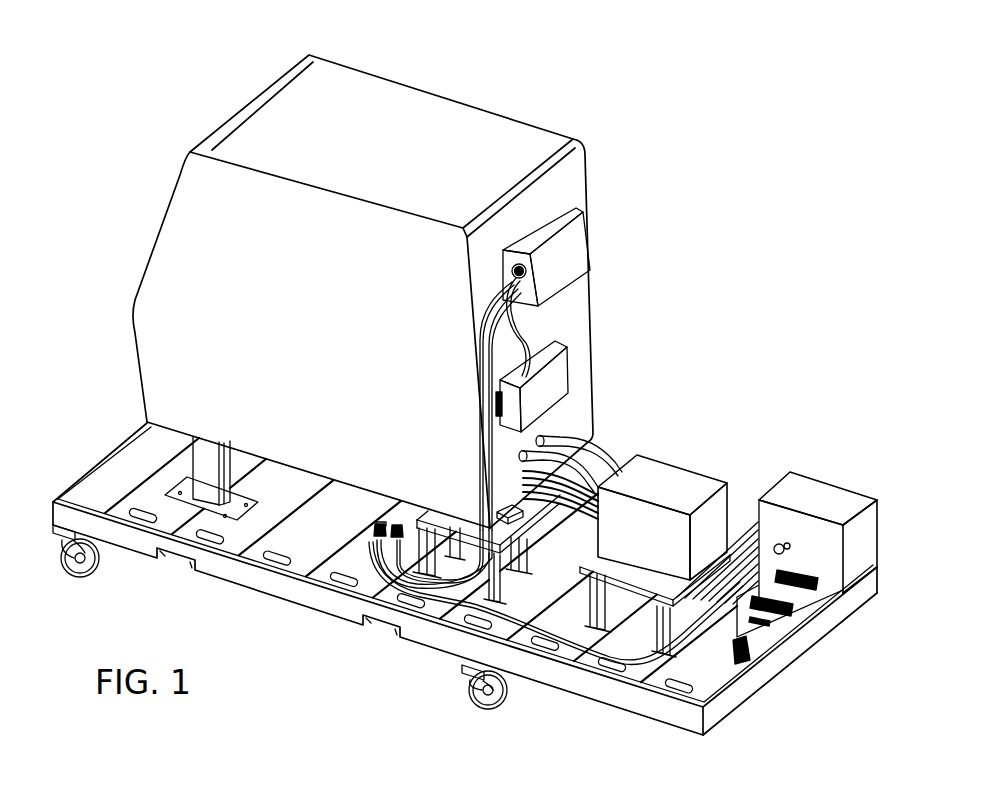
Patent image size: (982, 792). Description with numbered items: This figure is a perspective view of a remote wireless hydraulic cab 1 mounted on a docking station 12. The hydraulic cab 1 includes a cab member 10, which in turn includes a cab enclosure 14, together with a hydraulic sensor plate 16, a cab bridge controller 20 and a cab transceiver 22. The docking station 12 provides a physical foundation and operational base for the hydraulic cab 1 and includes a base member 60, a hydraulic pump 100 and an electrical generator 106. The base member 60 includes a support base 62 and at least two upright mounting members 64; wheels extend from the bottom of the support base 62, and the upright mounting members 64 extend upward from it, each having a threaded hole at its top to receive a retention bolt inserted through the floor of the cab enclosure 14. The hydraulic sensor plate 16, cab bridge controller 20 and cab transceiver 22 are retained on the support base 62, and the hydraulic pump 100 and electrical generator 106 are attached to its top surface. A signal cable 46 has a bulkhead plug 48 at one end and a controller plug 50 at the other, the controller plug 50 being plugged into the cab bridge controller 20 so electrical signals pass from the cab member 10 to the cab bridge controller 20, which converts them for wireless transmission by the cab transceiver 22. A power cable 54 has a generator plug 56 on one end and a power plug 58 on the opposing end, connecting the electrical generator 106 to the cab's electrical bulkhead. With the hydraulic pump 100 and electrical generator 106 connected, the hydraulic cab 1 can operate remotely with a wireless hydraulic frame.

The remote wireless hydraulic cab 1 is at (630, 318).
The cab member 10 is at (140, 190).
The docking station 12 is at (60, 458).
The cab enclosure 14 is at (133, 300).
The hydraulic sensor plate 16 is at (803, 540).
The cab bridge controller 20 is at (547, 218).
The cab transceiver 22 is at (553, 340).
The signal cable 46 is at (398, 549).
The bulkhead plug 48 is at (397, 524).
The controller plug 50 is at (516, 266).
The power cable 54 is at (383, 570).
The generator plug 56 is at (374, 536).
The power plug 58 is at (797, 580).
The base member 60 is at (102, 560).
The support base 62 is at (200, 566).
The upright mounting members 64 is at (190, 456).
The hydraulic pump 100 is at (660, 470).
The electrical generator 106 is at (843, 495).